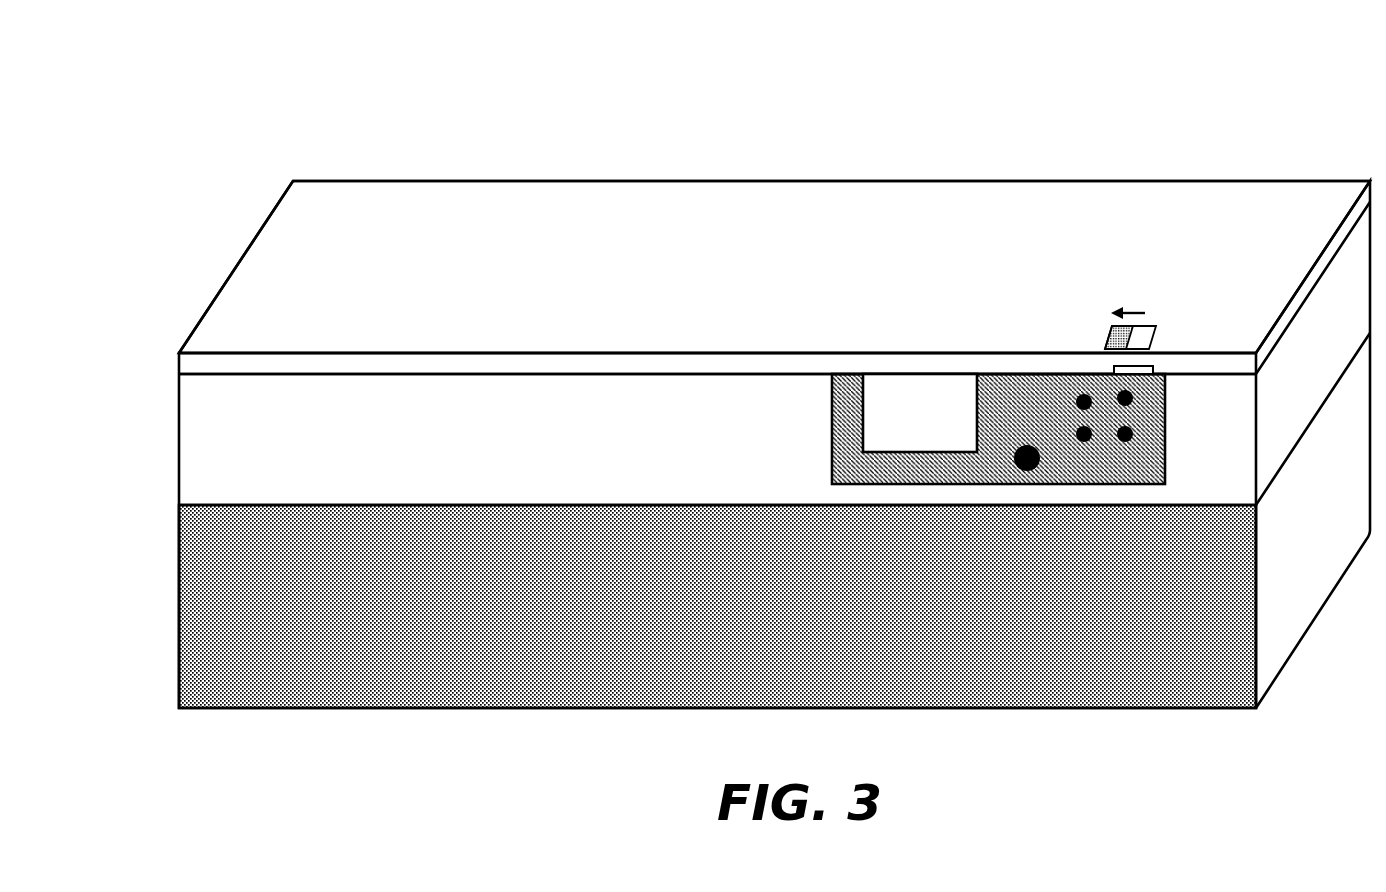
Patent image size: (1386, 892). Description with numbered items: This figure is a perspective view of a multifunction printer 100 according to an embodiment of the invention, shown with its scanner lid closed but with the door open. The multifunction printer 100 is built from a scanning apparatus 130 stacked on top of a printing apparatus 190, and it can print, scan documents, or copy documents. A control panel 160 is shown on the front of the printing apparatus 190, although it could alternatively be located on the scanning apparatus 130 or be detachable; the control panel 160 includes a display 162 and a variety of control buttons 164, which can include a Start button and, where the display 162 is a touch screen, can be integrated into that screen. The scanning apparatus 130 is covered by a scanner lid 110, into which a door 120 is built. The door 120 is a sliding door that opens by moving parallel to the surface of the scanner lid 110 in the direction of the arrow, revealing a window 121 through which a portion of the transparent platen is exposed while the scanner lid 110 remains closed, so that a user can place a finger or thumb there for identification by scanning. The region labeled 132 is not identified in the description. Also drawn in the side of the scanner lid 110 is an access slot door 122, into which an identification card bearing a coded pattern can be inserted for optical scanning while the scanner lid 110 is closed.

The multifunction printer 100 is at (298, 101).
The scanner lid 110 is at (277, 248).
The door 120 is at (1108, 338).
The window 121 is at (1158, 332).
The access slot door 122 is at (1157, 369).
The scanning apparatus 130 is at (153, 363).
The intermediate layer 132 is at (179, 408).
The control panel 160 is at (847, 465).
The display 162 is at (940, 428).
The control buttons 164 is at (1132, 399).
The printing apparatus 190 is at (179, 678).